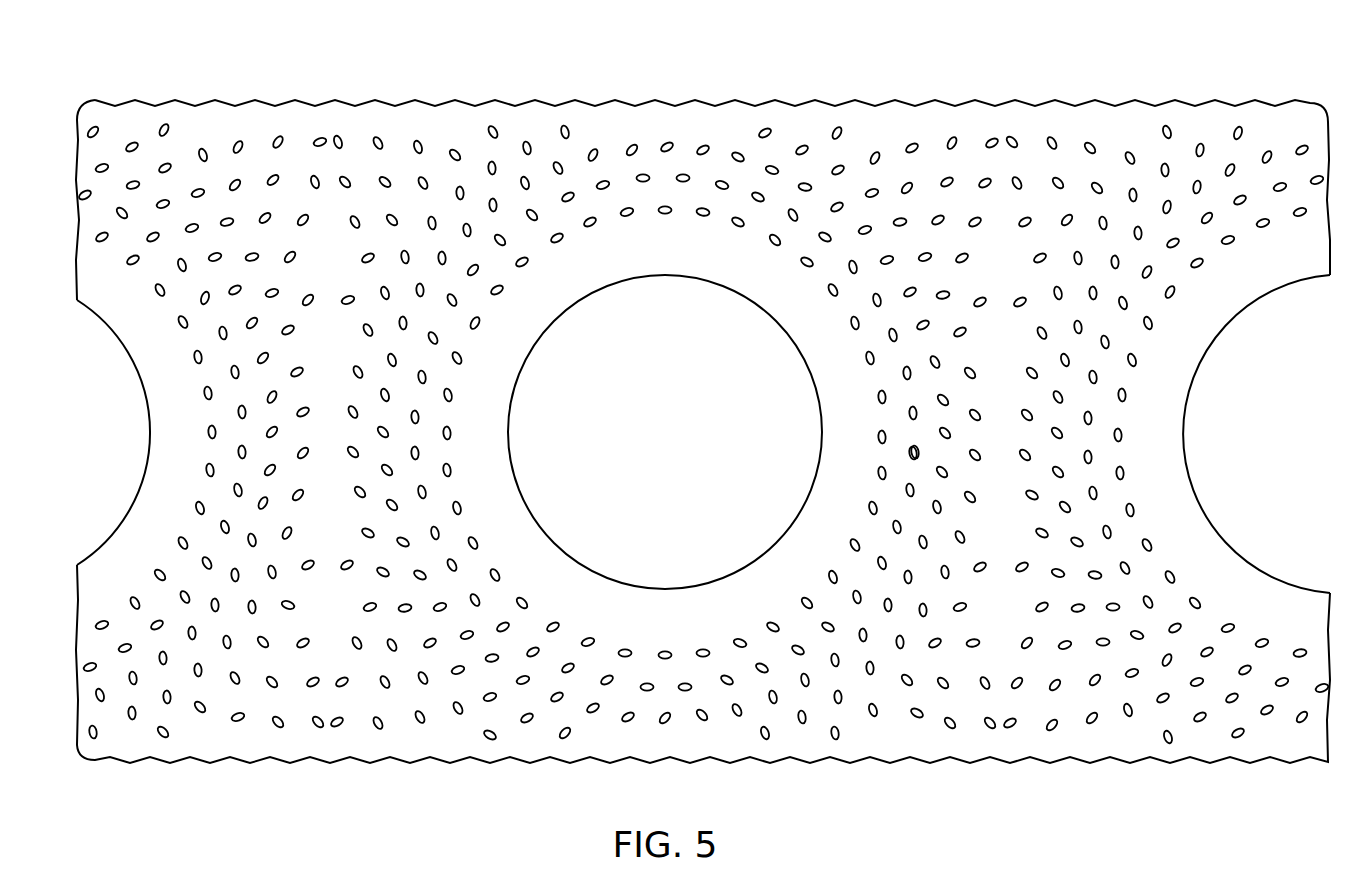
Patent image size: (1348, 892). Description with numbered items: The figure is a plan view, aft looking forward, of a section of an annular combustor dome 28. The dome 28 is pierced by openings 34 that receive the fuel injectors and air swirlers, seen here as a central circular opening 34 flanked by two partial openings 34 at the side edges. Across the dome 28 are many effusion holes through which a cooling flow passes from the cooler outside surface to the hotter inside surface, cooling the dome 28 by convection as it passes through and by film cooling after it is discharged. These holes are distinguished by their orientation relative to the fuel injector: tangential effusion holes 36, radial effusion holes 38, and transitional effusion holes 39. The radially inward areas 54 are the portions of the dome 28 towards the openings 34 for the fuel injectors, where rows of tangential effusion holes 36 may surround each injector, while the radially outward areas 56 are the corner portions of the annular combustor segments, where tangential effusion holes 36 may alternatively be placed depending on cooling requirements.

The dome 28 is at (155, 85).
The opening 34 is at (82, 446).
The tangential effusion hole 36 is at (666, 217).
The radial effusion hole 38 is at (905, 148).
The transitional effusion hole 39 is at (735, 152).
The radially inward area 54 is at (112, 250).
The radially outward area 56 is at (243, 173).